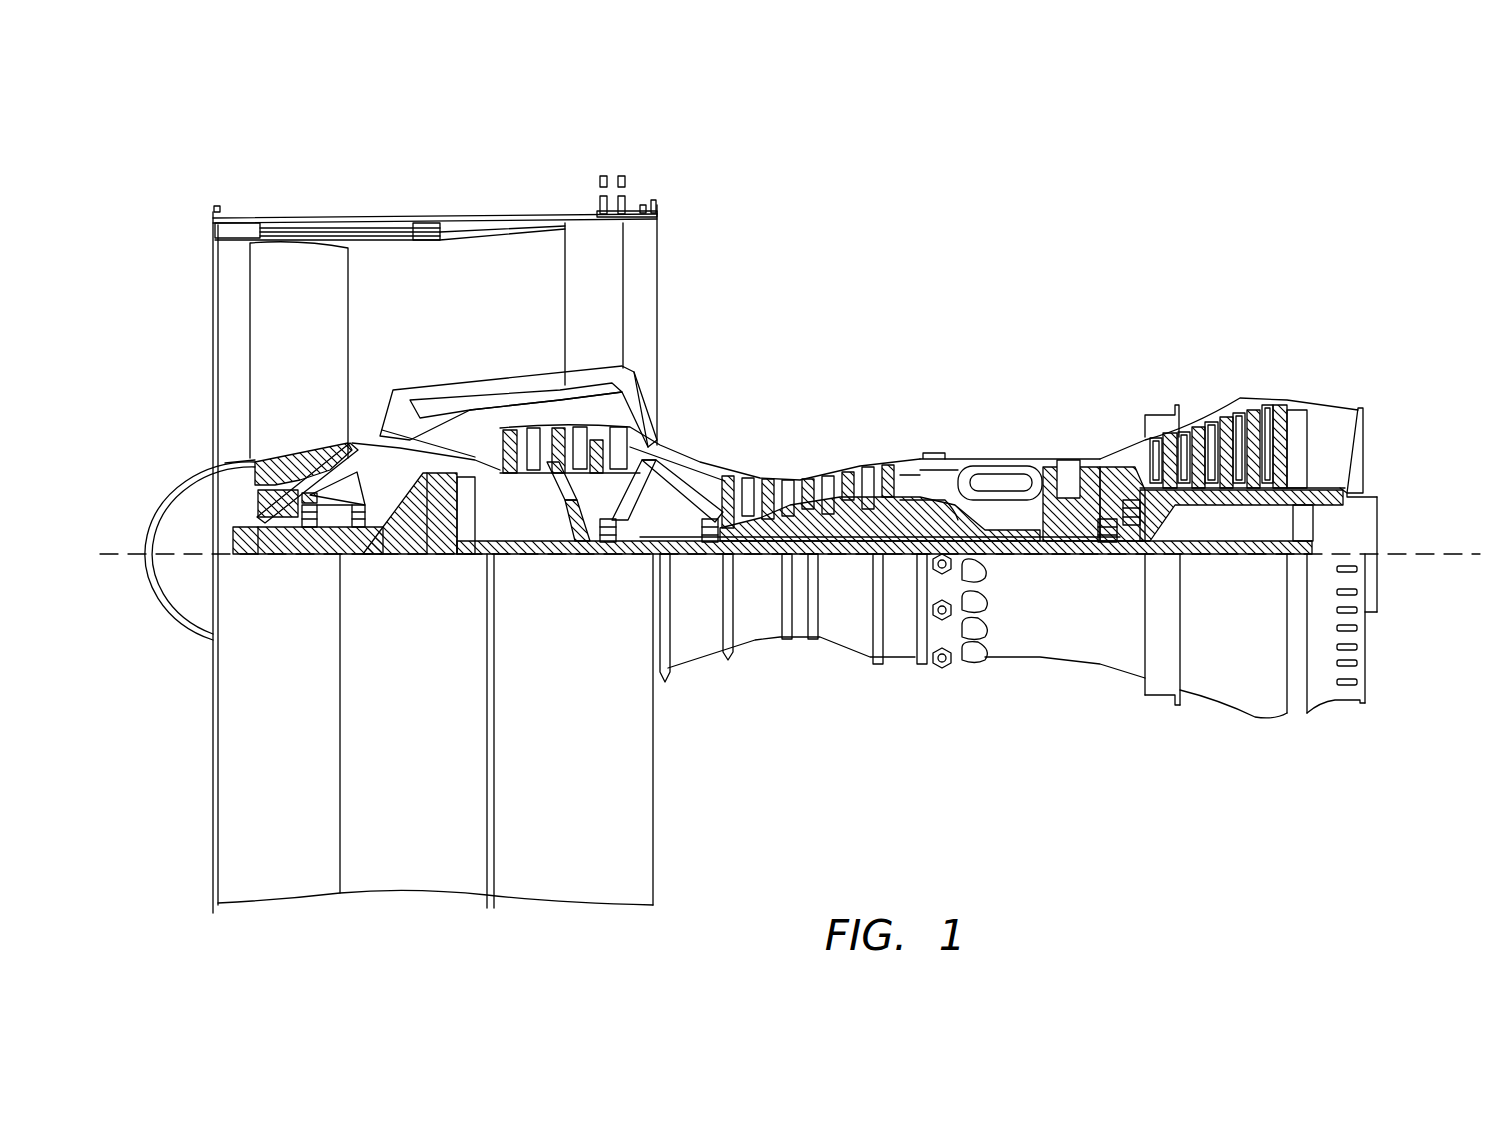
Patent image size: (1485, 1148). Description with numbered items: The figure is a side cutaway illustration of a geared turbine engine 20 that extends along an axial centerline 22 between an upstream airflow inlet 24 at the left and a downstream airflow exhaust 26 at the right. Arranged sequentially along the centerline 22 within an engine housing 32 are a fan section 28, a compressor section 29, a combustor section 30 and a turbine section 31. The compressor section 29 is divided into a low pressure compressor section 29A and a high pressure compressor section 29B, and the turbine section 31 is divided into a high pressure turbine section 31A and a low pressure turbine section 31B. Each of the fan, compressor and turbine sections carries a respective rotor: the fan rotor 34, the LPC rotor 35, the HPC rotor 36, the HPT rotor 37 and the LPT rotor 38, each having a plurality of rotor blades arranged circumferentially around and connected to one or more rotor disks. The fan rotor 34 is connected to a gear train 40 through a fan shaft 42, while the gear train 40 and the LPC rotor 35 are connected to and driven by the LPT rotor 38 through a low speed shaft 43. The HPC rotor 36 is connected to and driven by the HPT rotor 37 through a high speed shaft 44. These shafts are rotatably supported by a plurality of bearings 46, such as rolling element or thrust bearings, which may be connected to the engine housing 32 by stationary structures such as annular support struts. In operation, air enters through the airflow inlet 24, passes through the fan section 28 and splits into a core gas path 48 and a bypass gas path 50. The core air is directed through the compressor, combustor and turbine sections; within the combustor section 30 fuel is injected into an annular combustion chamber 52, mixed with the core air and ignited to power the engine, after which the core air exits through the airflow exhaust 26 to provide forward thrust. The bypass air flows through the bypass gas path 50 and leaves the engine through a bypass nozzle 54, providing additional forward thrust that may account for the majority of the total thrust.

The geared turbine engine 20 is at (188, 138).
The axial centerline 22 is at (1447, 572).
The upstream airflow inlet 24 is at (213, 293).
The downstream airflow exhaust 26 is at (1378, 443).
The fan section 28 is at (215, 192).
The compressor section 29 is at (480, 112).
The low pressure compressor section 29A is at (657, 173).
The high pressure compressor section 29B is at (688, 378).
The combustor section 30 is at (922, 378).
The turbine section 31 is at (1040, 303).
The high pressure turbine section 31A is at (1092, 466).
The low pressure turbine section 31B is at (1258, 432).
The engine housing 32 is at (672, 700).
The fan rotor 34 is at (240, 475).
The LPC rotor 35 is at (556, 556).
The HPC rotor 36 is at (838, 512).
The HPT rotor 37 is at (1068, 530).
The LPT rotor 38 is at (1228, 496).
The gear train 40 is at (440, 556).
The fan shaft 42 is at (262, 556).
The low speed shaft 43 is at (1237, 556).
The high speed shaft 44 is at (998, 537).
The bearings 46 is at (332, 556).
The core gas path 48 is at (682, 471).
The bypass gas path 50 is at (496, 312).
The combustion chamber 52 is at (988, 480).
The bypass nozzle 54 is at (657, 283).